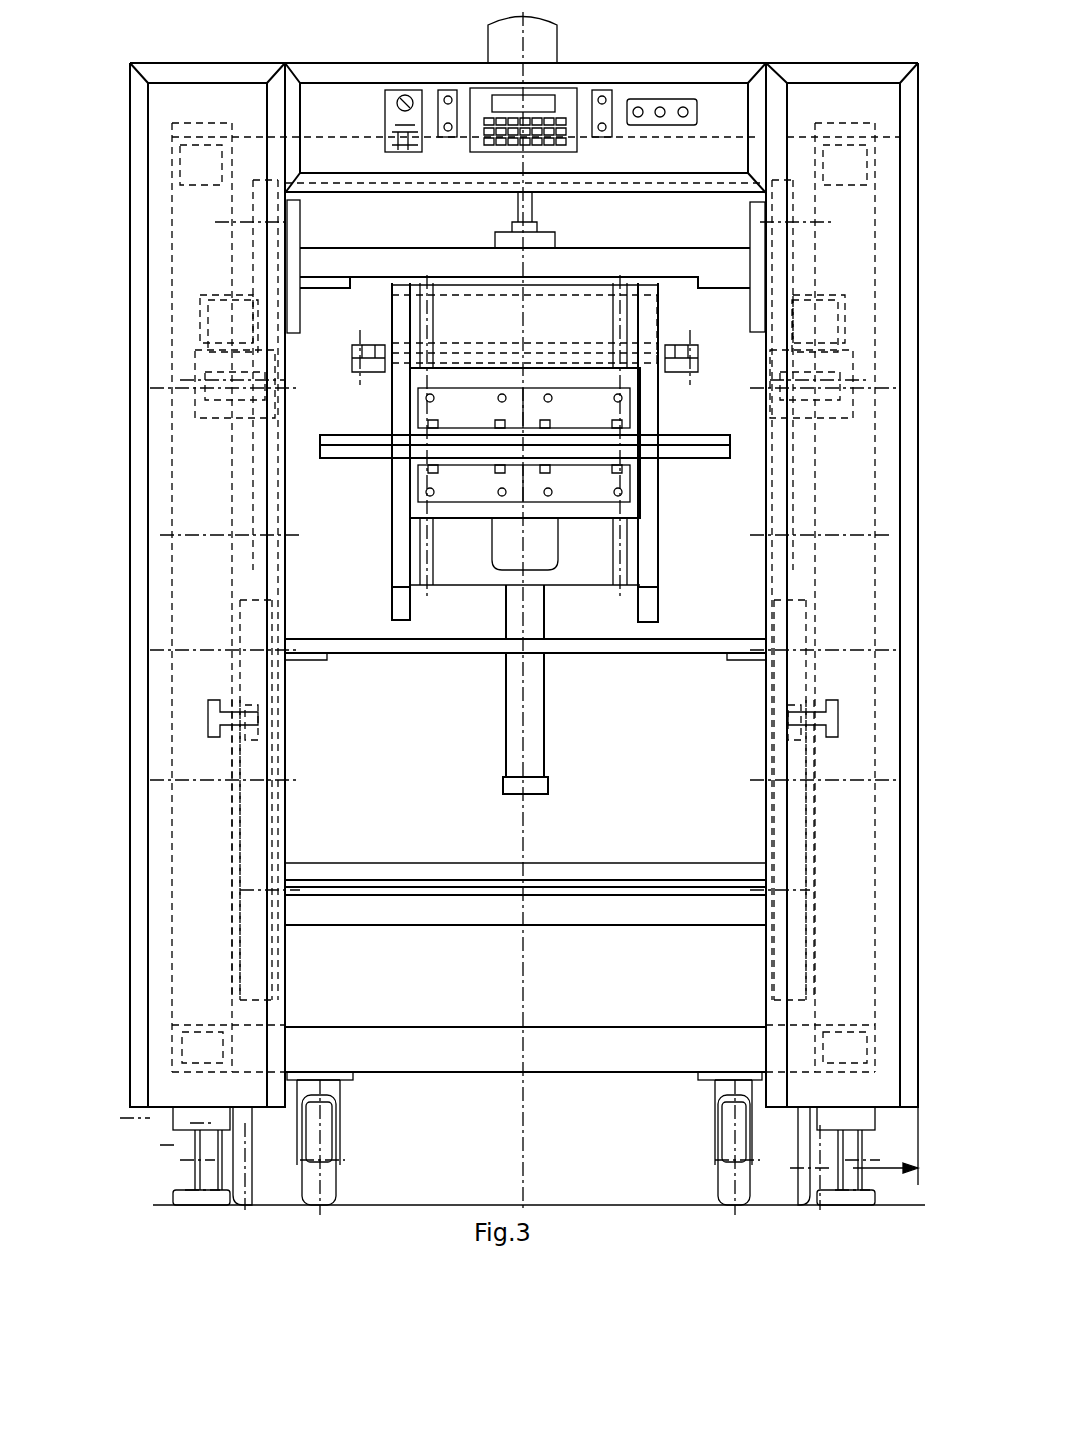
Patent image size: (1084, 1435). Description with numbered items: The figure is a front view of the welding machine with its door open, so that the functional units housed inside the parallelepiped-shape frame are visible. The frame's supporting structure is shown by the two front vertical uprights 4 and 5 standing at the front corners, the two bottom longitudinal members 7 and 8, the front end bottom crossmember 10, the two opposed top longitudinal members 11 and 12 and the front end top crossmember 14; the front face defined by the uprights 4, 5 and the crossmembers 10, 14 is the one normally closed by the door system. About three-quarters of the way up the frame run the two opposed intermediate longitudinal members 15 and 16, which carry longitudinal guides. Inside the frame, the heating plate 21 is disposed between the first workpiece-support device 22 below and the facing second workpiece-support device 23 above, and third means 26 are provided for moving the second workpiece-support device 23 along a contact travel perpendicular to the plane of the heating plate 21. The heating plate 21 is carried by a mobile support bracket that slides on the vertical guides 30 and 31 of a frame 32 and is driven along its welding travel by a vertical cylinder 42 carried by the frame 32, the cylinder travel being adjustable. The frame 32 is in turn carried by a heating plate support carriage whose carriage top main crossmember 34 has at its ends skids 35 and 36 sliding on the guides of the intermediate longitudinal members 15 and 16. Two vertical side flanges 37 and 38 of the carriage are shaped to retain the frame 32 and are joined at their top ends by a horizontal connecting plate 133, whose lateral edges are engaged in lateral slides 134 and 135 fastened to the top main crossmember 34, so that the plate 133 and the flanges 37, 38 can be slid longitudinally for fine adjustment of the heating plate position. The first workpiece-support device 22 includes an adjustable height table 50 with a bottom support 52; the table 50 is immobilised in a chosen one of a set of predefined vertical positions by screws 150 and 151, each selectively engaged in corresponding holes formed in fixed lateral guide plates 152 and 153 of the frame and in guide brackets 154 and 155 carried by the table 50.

The vertical upright 4 is at (150, 735).
The vertical upright 5 is at (875, 735).
The bottom longitudinal member 7 is at (190, 1050).
The bottom longitudinal member 8 is at (848, 1045).
The end bottom crossmember 10 is at (605, 1055).
The top longitudinal member 11 is at (185, 160).
The top longitudinal member 12 is at (860, 160).
The end top crossmember 14 is at (340, 130).
The intermediate longitudinal member 15 is at (200, 412).
The intermediate longitudinal member 16 is at (838, 398).
The heating plate 21 is at (360, 455).
The first workpiece-support device 22 is at (650, 664).
The second workpiece-support device 23 is at (570, 262).
The third means for moving 26 is at (540, 48).
The vertical guide 30 is at (433, 578).
The vertical guide 31 is at (620, 570).
The frame 32 is at (468, 574).
The carriage top main crossmember 34 is at (733, 315).
The skid 35 is at (205, 378).
The skid 36 is at (770, 370).
The vertical side flange 37 is at (392, 602).
The vertical side flange 38 is at (655, 598).
The vertical cylinder 42 is at (545, 710).
The adjustable height table 50 is at (420, 645).
The bottom support 52 is at (588, 912).
The horizontal connecting plate 133 is at (385, 365).
The lateral slide 134 is at (352, 362).
The lateral slide 135 is at (698, 360).
The screw 150 is at (215, 705).
The screw 151 is at (832, 700).
The fixed lateral guide plate 152 is at (236, 780).
The fixed lateral guide plate 153 is at (812, 780).
The guide bracket 154 is at (258, 722).
The guide bracket 155 is at (790, 727).